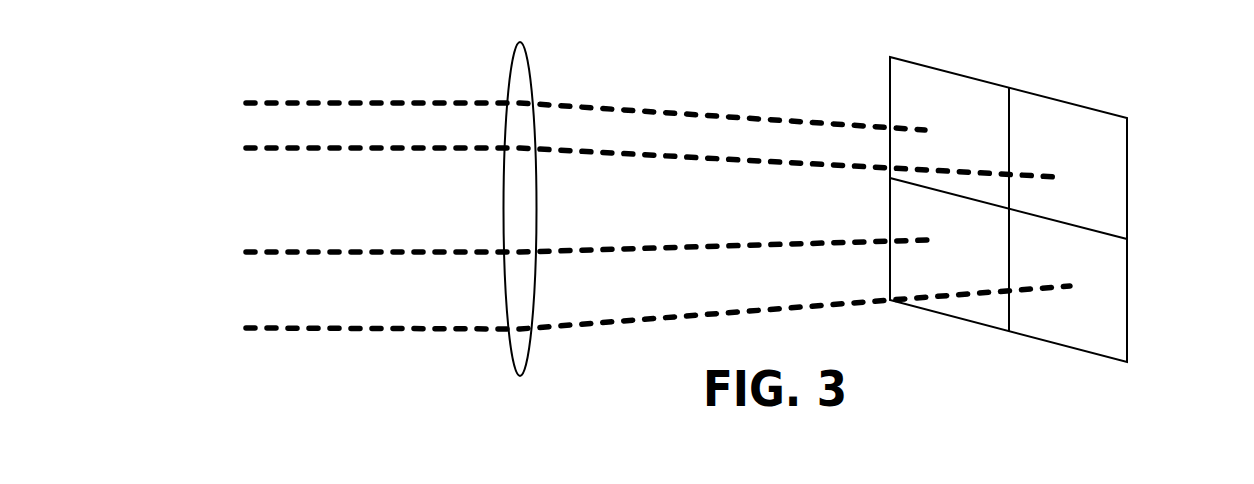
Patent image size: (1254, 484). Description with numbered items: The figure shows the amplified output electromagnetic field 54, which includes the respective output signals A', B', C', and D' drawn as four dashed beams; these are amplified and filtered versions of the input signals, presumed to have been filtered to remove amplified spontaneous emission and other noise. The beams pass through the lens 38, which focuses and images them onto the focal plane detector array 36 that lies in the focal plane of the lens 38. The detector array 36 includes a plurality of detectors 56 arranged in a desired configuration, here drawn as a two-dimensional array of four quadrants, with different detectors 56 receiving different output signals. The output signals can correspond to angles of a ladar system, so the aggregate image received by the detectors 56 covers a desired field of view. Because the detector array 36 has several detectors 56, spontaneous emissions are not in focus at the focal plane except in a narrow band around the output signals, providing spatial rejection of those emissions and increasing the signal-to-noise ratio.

The amplified output electromagnetic field 54 is at (262, 84).
The lens 38 is at (527, 60).
The focal plane detector array 36 is at (1150, 142).
The detectors 56 is at (913, 101).